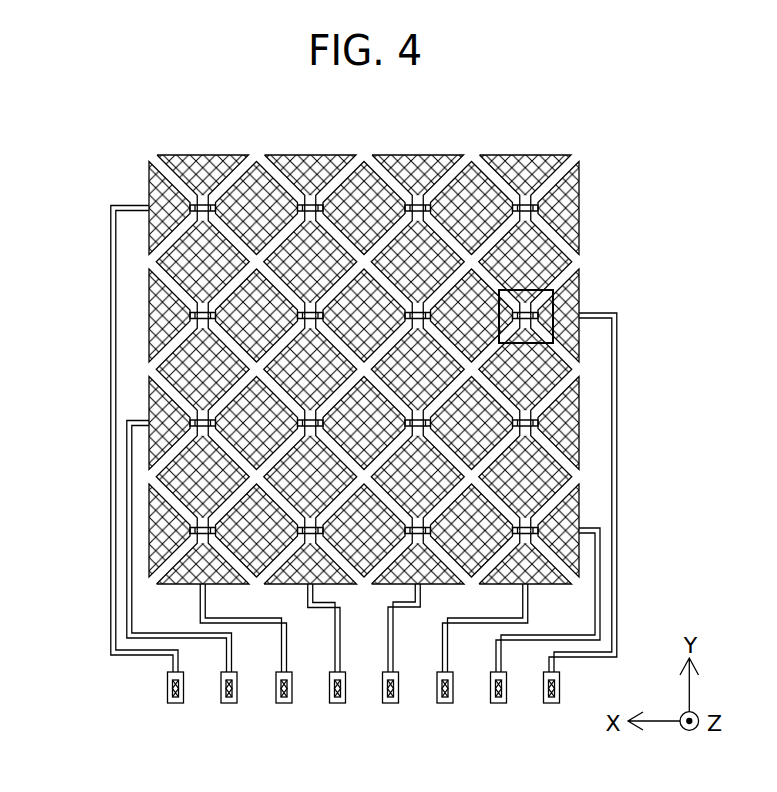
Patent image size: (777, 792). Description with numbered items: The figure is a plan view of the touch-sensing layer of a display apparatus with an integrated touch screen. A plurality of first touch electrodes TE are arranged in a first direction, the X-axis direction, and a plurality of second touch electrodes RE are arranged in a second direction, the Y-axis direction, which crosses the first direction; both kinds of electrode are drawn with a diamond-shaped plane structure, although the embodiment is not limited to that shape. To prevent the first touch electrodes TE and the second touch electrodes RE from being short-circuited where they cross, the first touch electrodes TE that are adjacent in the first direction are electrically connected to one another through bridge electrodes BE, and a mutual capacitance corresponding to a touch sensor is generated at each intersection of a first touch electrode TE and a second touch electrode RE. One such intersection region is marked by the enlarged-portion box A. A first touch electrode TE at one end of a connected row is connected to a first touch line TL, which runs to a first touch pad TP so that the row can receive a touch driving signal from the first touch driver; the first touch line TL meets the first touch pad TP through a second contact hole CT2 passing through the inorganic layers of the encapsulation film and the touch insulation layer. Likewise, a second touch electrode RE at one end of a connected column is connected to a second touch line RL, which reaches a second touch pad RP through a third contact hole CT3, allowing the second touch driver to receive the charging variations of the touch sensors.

The second touch electrode RE is at (537, 155).
The first touch electrode TE is at (571, 229).
The bridge electrode BE is at (538, 210).
The region A (enlarged portion) A is at (552, 292).
The first touch line TL is at (110, 302).
The second touch line RL is at (253, 625).
The first touch pad TP is at (173, 705).
The second touch pad RP is at (385, 705).
The second contact hole CT2 is at (178, 703).
The third contact hole CT3 is at (333, 679).